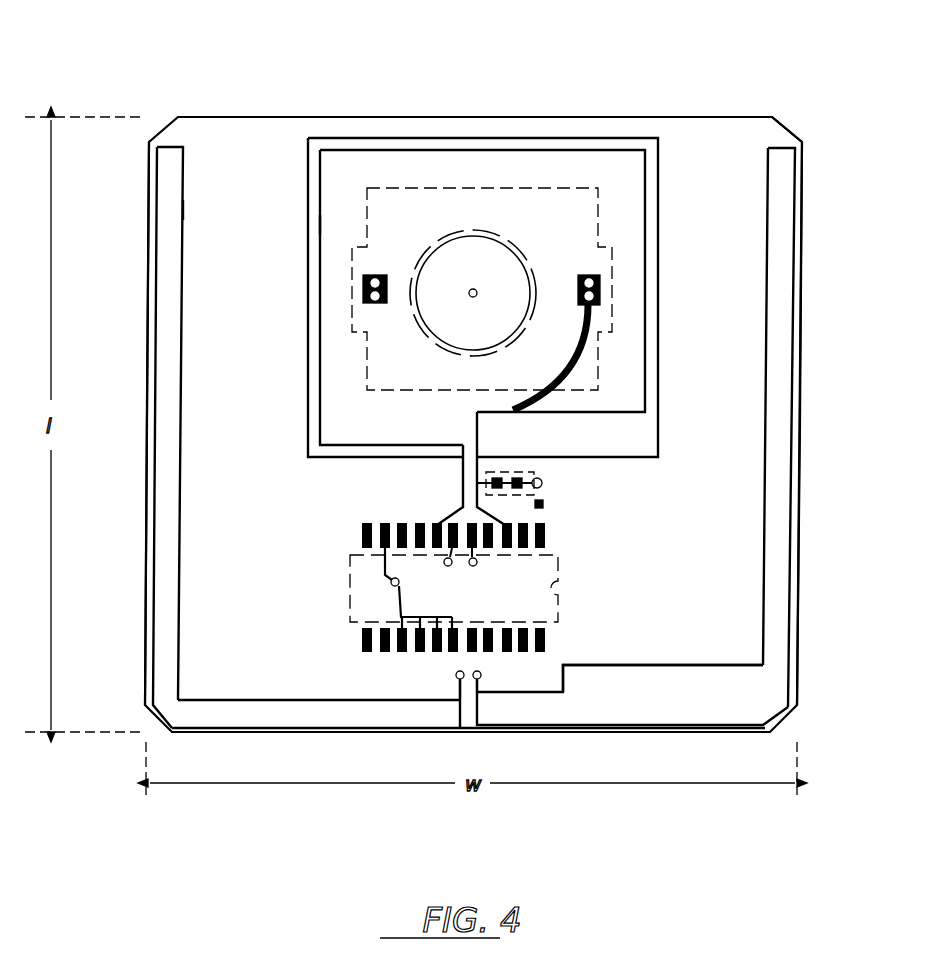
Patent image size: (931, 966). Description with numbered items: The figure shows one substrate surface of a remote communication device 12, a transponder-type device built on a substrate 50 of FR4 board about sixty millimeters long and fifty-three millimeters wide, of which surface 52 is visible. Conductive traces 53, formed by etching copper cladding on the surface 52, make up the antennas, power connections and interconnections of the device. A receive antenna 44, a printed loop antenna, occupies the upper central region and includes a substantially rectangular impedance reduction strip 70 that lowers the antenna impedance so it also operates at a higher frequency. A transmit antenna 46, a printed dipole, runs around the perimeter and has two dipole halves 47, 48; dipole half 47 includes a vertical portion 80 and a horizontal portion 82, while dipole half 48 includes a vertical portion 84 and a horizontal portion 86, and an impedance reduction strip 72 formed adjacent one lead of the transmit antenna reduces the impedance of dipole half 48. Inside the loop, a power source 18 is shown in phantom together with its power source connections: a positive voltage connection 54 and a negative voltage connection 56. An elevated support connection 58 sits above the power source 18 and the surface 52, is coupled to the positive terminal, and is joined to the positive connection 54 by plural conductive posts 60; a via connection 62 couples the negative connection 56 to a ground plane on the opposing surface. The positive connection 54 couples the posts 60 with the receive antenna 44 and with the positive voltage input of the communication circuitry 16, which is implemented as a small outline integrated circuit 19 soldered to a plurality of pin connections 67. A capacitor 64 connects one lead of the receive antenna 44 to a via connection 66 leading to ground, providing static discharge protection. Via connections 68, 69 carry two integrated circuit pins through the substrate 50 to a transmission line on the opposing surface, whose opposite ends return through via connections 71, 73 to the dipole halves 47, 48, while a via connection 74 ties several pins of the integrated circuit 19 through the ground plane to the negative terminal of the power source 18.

The remote communication device 12 is at (216, 88).
The communication circuitry 16 is at (316, 628).
The power source 18 is at (418, 330).
The integrated circuit 19 is at (560, 612).
The receive antenna 44 is at (430, 134).
The transmit antenna 46 is at (145, 512).
The dipole half 47 is at (147, 253).
The dipole half 48 is at (800, 360).
The substrate 50 is at (542, 112).
The surface 52 is at (249, 598).
The conductive traces 53 is at (196, 212).
The positive voltage connection 54 is at (584, 373).
The negative voltage connection 56 is at (513, 244).
The elevated support connection 58 is at (410, 188).
The conductive posts 60 is at (598, 297).
The via connection 62 is at (472, 289).
The capacitor 64 is at (517, 470).
The via connection 66 is at (542, 485).
The pin connections 67 is at (562, 537).
The via connection 68 is at (476, 566).
The via connection 69 is at (447, 567).
The impedance reduction strip 70 is at (461, 425).
The via connection 71 is at (455, 676).
The impedance reduction strip 72 is at (655, 665).
The via connection 73 is at (482, 675).
The via connection 74 is at (390, 582).
The vertical portion 80 is at (147, 590).
The horizontal portion 82 is at (320, 730).
The vertical portion 84 is at (797, 555).
The horizontal portion 86 is at (560, 732).